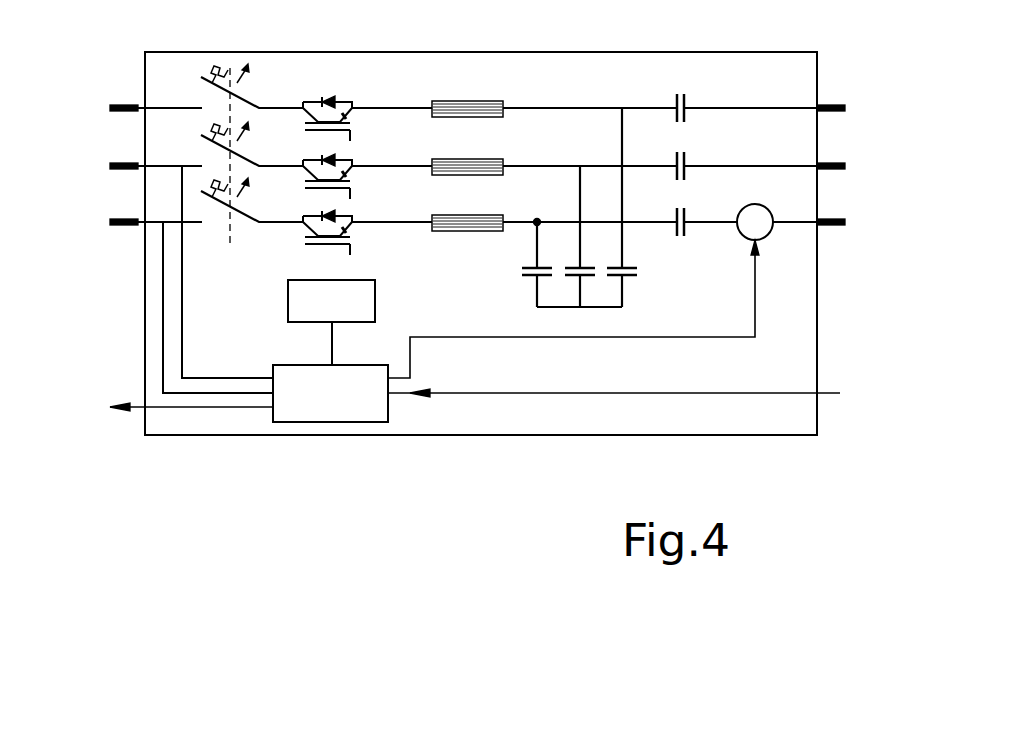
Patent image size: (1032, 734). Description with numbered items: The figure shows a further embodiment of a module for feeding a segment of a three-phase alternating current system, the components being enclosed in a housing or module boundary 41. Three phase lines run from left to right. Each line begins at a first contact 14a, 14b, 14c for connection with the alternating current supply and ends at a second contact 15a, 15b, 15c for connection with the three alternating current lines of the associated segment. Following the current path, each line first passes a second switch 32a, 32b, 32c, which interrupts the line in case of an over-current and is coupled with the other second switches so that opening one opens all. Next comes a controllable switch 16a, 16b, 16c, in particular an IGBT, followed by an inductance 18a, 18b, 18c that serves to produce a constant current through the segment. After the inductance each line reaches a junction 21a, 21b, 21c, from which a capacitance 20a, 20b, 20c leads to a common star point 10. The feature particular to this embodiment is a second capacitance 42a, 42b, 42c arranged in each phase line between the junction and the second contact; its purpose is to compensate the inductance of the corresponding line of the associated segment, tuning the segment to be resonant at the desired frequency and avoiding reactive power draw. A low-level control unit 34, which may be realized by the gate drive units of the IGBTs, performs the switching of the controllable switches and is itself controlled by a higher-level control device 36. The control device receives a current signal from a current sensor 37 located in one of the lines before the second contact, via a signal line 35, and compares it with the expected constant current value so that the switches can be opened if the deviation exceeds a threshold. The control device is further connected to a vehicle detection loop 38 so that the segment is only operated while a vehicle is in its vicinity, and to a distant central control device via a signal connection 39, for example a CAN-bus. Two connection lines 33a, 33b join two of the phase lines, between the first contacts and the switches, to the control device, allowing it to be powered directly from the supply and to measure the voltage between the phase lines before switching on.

The star point 10 is at (567, 390).
The first contact 14a is at (120, 219).
The first contact 14b is at (120, 163).
The first contact 14c is at (122, 106).
The second contact 15a is at (842, 225).
The second contact 15b is at (842, 168).
The second contact 15c is at (842, 112).
The controllable switch 16a is at (352, 244).
The controllable switch 16b is at (352, 188).
The controllable switch 16c is at (352, 130).
The inductance 18a is at (463, 215).
The inductance 18b is at (467, 159).
The inductance 18c is at (450, 101).
The capacitance 20a is at (528, 277).
The capacitance 20b is at (568, 277).
The capacitance 20c is at (640, 277).
The junction 21a is at (535, 224).
The junction 21b is at (580, 166).
The junction 21c is at (622, 108).
The second switch 32a is at (247, 220).
The second switch 32b is at (243, 155).
The second switch 32c is at (243, 100).
The connection line 33a is at (162, 351).
The connection line 33b is at (180, 312).
The low-level control unit 34 is at (375, 301).
The signal line 35 is at (535, 338).
The control device 36 is at (335, 423).
The current sensor 37 is at (770, 237).
The vehicle detection loop 38 is at (827, 392).
The signal connection 39 is at (185, 410).
The housing 41 is at (637, 436).
The second capacitance 42a is at (687, 208).
The second capacitance 42b is at (687, 151).
The second capacitance 42c is at (687, 93).